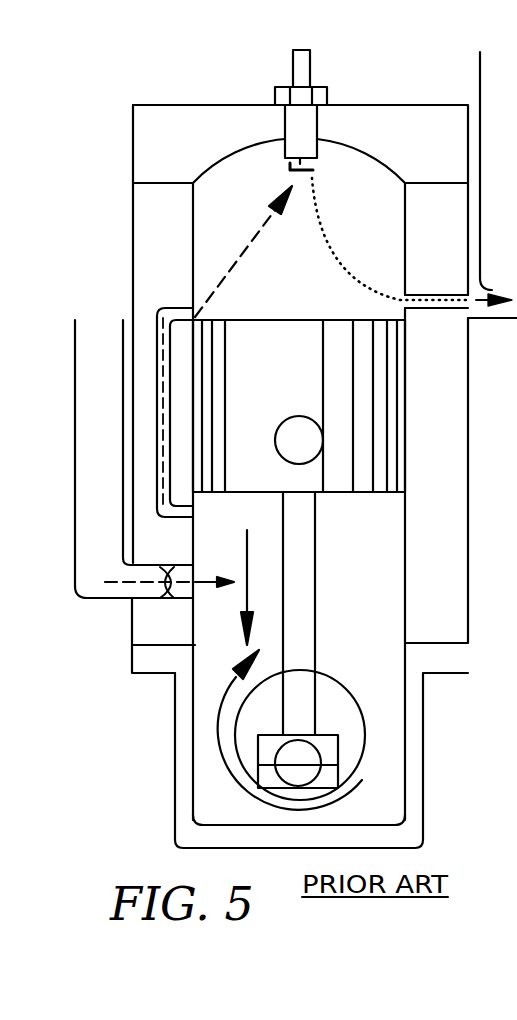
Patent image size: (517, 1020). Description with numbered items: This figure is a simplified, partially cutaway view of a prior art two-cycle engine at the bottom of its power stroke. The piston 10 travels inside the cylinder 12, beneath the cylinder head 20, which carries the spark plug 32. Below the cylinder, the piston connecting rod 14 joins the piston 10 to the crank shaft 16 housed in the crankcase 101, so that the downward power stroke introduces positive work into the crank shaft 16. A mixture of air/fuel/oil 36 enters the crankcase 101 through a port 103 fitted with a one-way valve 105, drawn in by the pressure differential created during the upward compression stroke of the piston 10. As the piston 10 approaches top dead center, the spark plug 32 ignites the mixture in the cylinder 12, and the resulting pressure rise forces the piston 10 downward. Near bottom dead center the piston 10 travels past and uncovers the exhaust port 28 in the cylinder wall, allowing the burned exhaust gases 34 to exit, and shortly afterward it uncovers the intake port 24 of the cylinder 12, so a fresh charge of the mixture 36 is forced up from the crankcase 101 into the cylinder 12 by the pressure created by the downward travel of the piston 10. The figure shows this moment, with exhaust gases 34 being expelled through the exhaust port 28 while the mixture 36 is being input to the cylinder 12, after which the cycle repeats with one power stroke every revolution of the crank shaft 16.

The piston 10 is at (363, 410).
The cylinder 12 is at (405, 534).
The piston connecting rod 14 is at (300, 652).
The crank shaft 16 is at (343, 720).
The cylinder head 20 is at (226, 118).
The intake port 24 is at (185, 305).
The exhaust port 28 is at (445, 310).
The spark plug 32 is at (300, 78).
The burned exhaust gases 34 is at (324, 240).
The air/fuel/oil mixture 36 is at (262, 262).
The crankcase 101 is at (380, 602).
The port 103 is at (110, 600).
The one-way valve 105 is at (165, 597).